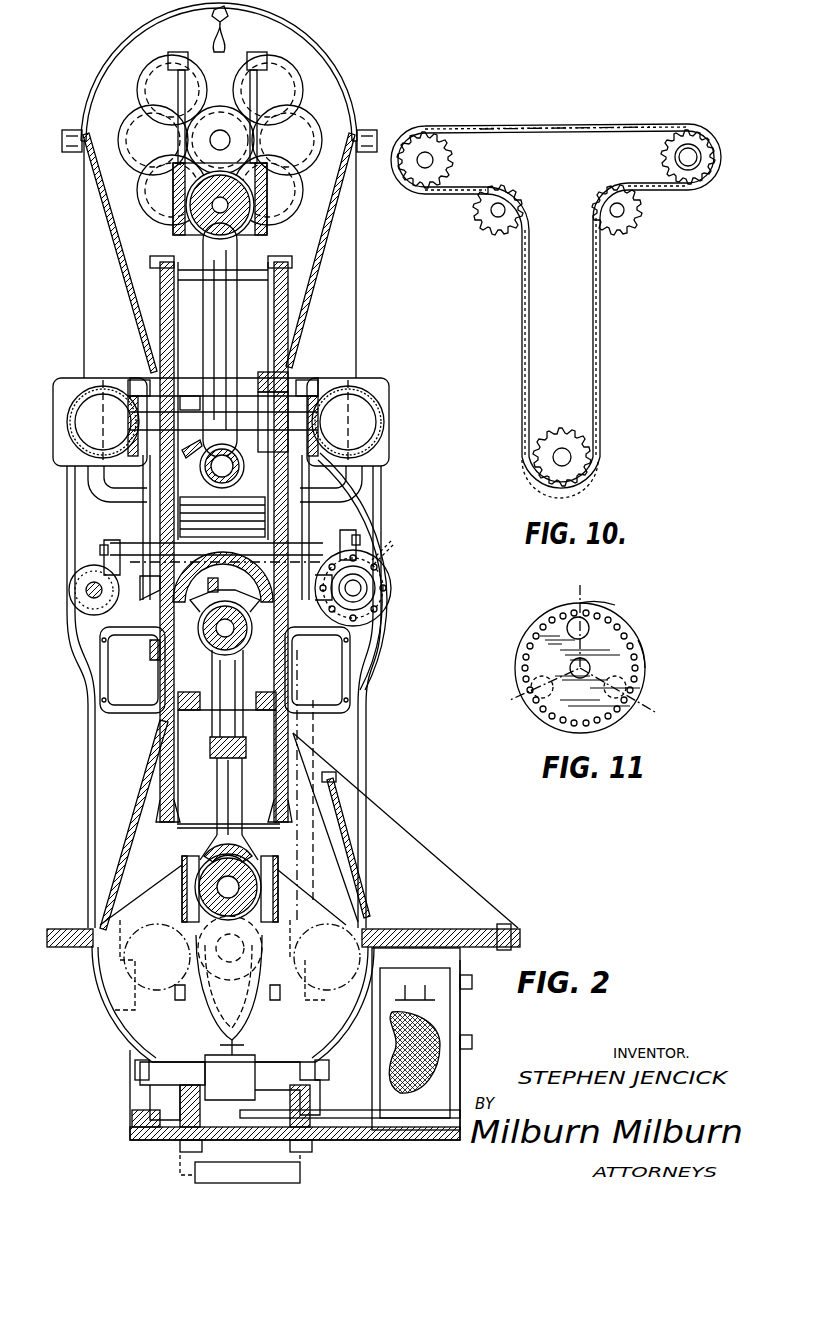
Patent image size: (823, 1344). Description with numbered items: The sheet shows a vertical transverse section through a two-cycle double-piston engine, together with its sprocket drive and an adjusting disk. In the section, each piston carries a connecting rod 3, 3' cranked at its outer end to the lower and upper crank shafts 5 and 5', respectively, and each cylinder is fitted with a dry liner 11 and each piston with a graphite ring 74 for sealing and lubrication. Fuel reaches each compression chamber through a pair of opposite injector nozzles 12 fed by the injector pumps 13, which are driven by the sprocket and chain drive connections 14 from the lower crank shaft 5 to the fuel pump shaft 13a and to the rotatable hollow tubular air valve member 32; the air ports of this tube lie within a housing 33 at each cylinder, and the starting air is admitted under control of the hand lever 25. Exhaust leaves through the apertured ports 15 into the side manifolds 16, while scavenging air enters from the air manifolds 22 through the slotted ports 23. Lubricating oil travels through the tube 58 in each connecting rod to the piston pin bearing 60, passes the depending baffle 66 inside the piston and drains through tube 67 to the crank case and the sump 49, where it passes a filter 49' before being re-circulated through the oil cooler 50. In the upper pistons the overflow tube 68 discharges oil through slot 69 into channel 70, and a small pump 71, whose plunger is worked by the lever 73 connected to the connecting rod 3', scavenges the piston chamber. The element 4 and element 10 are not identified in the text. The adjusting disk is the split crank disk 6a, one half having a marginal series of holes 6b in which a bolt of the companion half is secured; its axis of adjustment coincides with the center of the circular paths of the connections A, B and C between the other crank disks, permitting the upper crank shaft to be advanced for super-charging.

In FIG. 2, the connecting rod 3 is at (219, 756).
In FIG. 2, the connecting rod 3' is at (206, 340).
In FIG. 2, the cylinders 4 is at (258, 157).
In FIG. 2, the lower crank shaft 5 is at (211, 511).
In FIG. 10, the lower crank shaft 5 is at (579, 457).
In FIG. 11, the upper crank shaft 5' is at (532, 664).
In FIG. 11, the crank disk 6a is at (622, 622).
In FIG. 11, the holes 6b is at (634, 662).
In FIG. 2, the intake pipe 10 is at (150, 519).
In FIG. 2, the liner 11 is at (167, 346).
In FIG. 2, the injector nozzles 12 is at (104, 548).
In FIG. 2, the injector pumps 13 is at (70, 600).
In FIG. 2, the fuel pump shaft 13a is at (76, 590).
In FIG. 10, the fuel pump shaft 13a is at (425, 168).
In FIG. 2, the sprocket and chain drive connections 14 is at (320, 741).
In FIG. 10, the sprocket and chain drive connections 14 is at (600, 418).
In FIG. 2, the apertured ports 15 is at (137, 396).
In FIG. 2, the manifolds 16 is at (90, 420).
In FIG. 2, the manifolds 22 is at (125, 675).
In FIG. 2, the slotted ports 23 is at (120, 718).
In FIG. 2, the hand lever 25 is at (374, 562).
In FIG. 2, the tubular air valve member 32 is at (382, 580).
In FIG. 10, the tubular air valve member 32 is at (688, 172).
In FIG. 2, the housing 33 is at (384, 605).
In FIG. 2, the sump 49 is at (422, 1058).
In FIG. 2, the filter 49' is at (447, 1052).
In FIG. 2, the cooler 50 is at (302, 1176).
In FIG. 2, the tube 58 is at (220, 822).
In FIG. 2, the piston pin bearing 60 is at (222, 445).
In FIG. 2, the baffle 66 is at (228, 583).
In FIG. 2, the tube 67 is at (152, 648).
In FIG. 2, the tube 68 is at (262, 420).
In FIG. 2, the slot 69 is at (280, 302).
In FIG. 2, the channel 70 is at (290, 362).
In FIG. 2, the pump 71 is at (206, 424).
In FIG. 2, the lever 73 is at (212, 402).
In FIG. 2, the ring 74 is at (147, 593).
In FIG. 11, the connection A is at (574, 624).
In FIG. 11, the connection B is at (620, 698).
In FIG. 11, the connection C is at (540, 696).